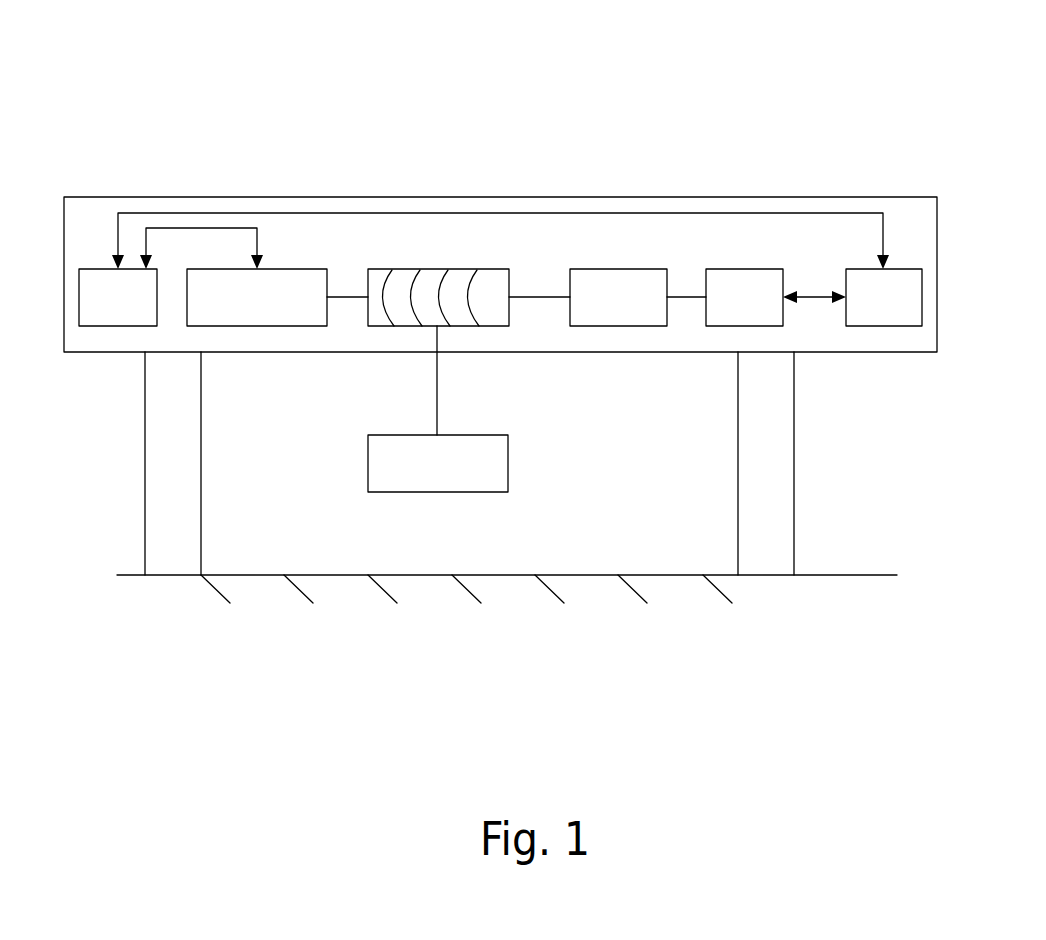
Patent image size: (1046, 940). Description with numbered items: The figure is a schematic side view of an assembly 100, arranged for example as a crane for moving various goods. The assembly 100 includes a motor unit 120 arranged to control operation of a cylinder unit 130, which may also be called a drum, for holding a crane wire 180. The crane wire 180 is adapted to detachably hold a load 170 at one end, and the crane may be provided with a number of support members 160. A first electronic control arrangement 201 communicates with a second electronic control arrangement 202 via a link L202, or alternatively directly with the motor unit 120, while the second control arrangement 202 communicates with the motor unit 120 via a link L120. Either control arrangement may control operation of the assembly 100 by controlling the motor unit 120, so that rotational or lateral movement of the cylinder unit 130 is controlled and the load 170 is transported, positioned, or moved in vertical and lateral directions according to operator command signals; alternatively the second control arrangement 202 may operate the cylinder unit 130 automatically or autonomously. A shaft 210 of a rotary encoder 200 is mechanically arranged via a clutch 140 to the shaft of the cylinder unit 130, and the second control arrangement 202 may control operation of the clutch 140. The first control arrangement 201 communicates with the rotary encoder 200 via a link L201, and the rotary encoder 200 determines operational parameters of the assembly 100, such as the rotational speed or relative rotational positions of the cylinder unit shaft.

The assembly 100 is at (391, 94).
The motor unit 120 is at (257, 297).
The cylinder unit 130 is at (477, 326).
The clutch 140 is at (618, 297).
The support members 160 is at (795, 461).
The load 170 is at (438, 463).
The crane wire 180 is at (437, 390).
The rotary encoder 200 is at (744, 297).
The first electronic control arrangement 201 is at (884, 297).
The second electronic control arrangement 202 is at (118, 297).
The shaft 210 is at (677, 297).
The link L120 is at (213, 228).
The link L201 is at (818, 301).
The link L202 is at (543, 213).